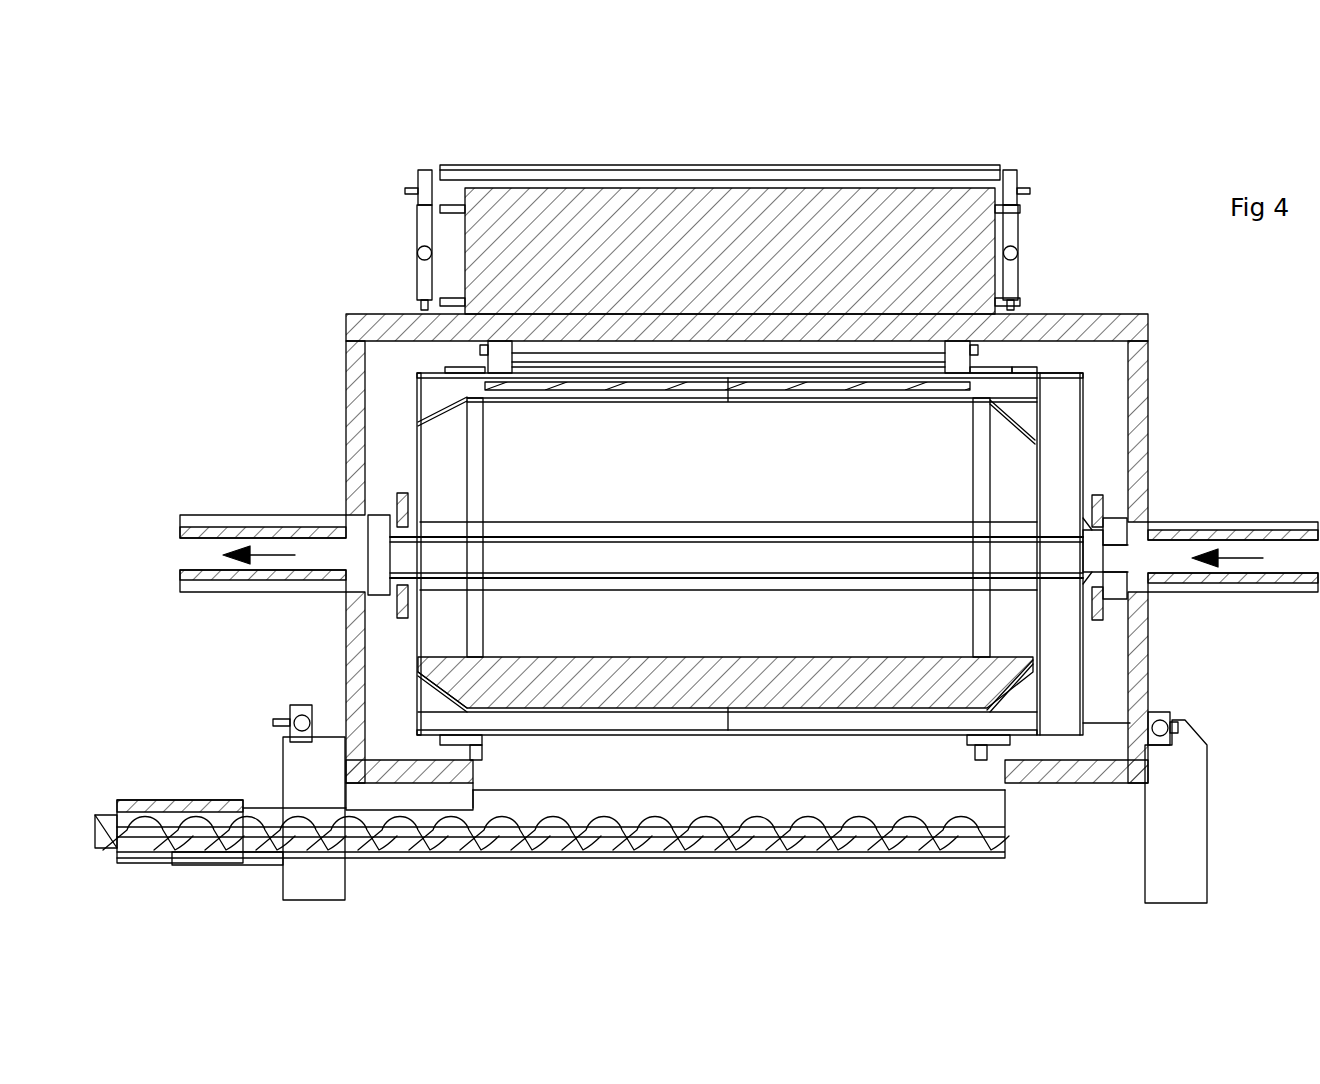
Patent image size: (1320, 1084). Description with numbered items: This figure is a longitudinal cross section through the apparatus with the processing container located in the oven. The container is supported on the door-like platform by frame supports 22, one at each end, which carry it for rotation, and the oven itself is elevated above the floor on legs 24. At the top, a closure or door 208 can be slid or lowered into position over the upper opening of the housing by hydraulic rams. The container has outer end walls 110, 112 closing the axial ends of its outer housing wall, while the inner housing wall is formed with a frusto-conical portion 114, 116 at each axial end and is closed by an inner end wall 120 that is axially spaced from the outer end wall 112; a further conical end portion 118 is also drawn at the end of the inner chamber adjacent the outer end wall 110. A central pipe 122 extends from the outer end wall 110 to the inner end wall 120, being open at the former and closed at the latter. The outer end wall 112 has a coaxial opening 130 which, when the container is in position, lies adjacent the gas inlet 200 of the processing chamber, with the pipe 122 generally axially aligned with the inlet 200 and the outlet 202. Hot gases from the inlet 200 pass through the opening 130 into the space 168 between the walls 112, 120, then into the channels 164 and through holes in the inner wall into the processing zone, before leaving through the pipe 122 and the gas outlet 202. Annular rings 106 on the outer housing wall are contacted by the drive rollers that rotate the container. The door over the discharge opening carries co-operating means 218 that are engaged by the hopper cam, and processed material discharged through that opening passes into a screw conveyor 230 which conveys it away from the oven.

The closure or door 208 is at (604, 178).
The co-operating means 218 is at (1020, 318).
The space 168 is at (1073, 375).
The outer end wall 112 is at (1085, 418).
The end wall 120 is at (1040, 465).
The frame supports 22 is at (1098, 495).
The gas inlet 200 is at (1253, 545).
The gas outlet 202 is at (272, 545).
The outer end wall 110 is at (420, 457).
The conical end wall 118 is at (450, 407).
The central conduit or pipe 122 is at (723, 537).
The coaxial opening 130 is at (1082, 558).
The frusto-conical portion 114 is at (417, 703).
The frusto-conical portion 116 is at (1015, 690).
The stilts or legs 24 is at (1180, 825).
The conveyor means 230 is at (592, 859).
The channels 164 is at (860, 722).
The rings 106 is at (990, 745).